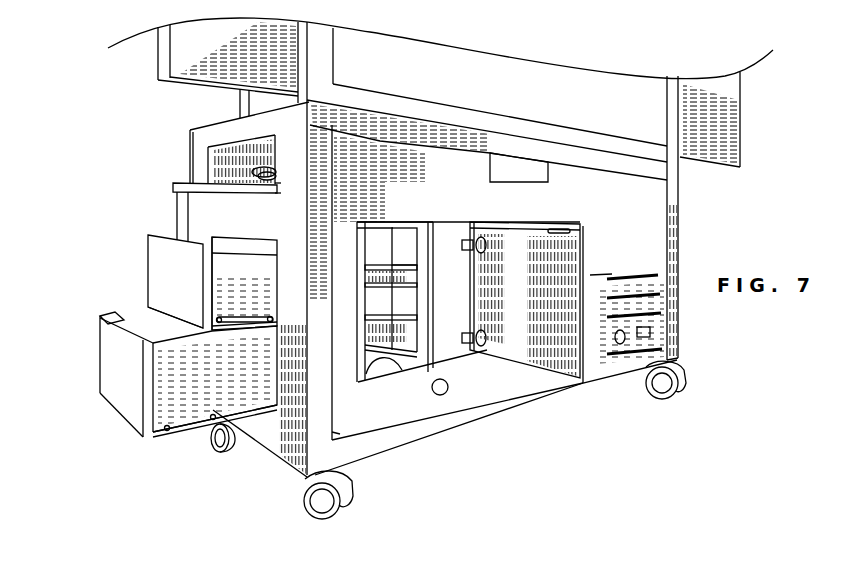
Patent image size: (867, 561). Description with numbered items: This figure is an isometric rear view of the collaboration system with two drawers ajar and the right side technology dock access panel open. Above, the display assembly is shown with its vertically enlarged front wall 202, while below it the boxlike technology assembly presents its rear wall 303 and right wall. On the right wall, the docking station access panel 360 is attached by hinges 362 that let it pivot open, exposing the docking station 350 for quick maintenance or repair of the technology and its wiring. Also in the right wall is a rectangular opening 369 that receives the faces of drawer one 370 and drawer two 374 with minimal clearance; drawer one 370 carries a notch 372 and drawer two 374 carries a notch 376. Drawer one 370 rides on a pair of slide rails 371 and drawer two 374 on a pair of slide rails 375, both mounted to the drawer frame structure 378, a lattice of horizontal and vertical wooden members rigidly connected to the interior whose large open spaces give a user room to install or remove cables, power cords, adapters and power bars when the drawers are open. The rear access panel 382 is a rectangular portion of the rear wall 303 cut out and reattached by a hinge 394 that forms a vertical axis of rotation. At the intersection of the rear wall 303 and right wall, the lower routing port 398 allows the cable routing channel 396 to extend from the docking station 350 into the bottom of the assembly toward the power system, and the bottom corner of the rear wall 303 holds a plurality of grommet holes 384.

The front wall 202 is at (297, 125).
The rear wall 303 is at (643, 222).
The docking station 350 is at (233, 167).
The docking station access panel 360 is at (174, 185).
The hinges 362 is at (278, 186).
The notch 372 is at (181, 242).
The drawer one 370 is at (165, 264).
The slide rails 371 is at (211, 328).
The rectangular opening 369 is at (268, 326).
The drawer two 374 is at (123, 373).
The notch 376 is at (110, 322).
The slide rails 375 is at (165, 433).
The lower routing port 398 is at (358, 223).
The drawer frame structure 378 is at (423, 250).
The hinge 394 is at (487, 247).
The rear access panel 382 is at (590, 275).
The cable routing channel 396 is at (332, 432).
The grommet holes 384 is at (440, 395).